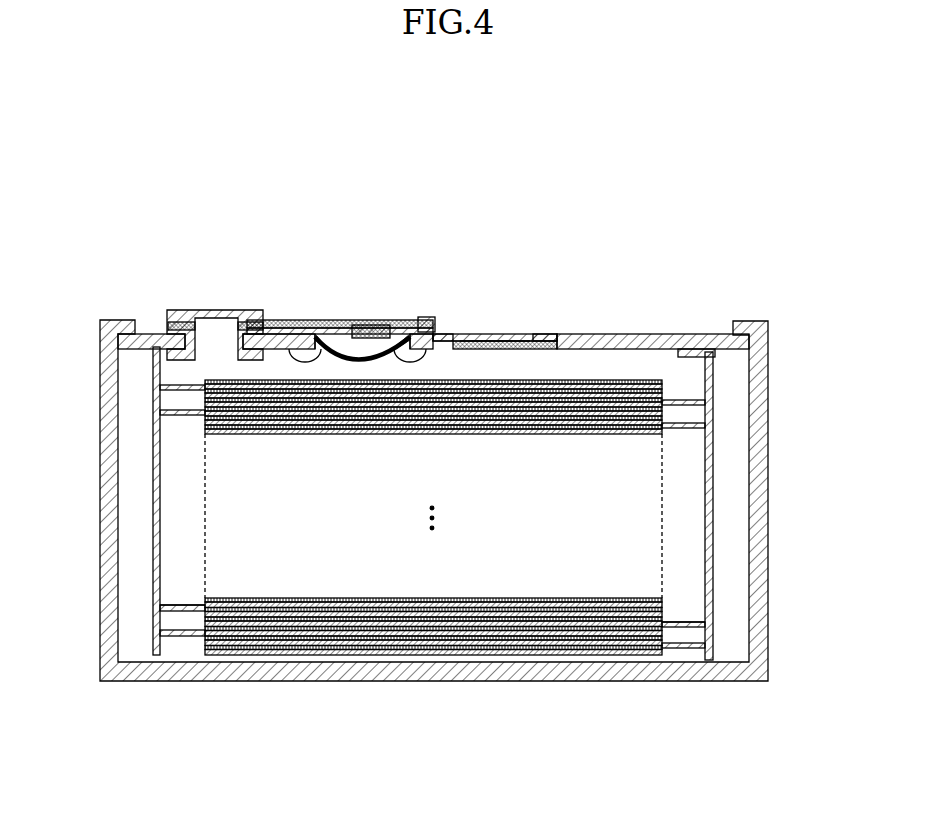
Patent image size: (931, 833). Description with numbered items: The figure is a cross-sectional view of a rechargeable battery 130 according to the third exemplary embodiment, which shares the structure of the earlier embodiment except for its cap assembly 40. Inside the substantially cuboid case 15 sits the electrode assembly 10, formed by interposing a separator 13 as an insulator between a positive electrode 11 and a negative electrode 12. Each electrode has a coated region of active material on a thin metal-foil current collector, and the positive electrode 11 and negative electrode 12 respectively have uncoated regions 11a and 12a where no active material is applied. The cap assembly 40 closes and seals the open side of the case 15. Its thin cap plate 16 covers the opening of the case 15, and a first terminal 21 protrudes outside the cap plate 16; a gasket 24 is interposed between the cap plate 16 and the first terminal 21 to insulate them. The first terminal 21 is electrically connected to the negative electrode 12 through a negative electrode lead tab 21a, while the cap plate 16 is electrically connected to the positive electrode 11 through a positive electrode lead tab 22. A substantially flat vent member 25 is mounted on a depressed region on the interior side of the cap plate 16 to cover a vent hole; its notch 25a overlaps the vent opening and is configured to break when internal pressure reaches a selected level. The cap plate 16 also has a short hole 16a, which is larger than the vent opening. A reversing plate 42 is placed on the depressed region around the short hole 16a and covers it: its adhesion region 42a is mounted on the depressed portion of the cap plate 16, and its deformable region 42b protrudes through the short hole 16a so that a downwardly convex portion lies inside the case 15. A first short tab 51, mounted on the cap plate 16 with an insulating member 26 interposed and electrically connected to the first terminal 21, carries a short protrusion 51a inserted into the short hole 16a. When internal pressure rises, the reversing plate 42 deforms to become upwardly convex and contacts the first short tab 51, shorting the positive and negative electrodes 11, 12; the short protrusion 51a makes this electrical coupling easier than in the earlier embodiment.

The rechargeable battery 130 is at (499, 140).
The electrode assembly 10 is at (437, 568).
The positive electrode 11 is at (425, 655).
The negative electrode 12 is at (300, 645).
The separator 13 is at (355, 645).
The uncoated region 11a is at (692, 648).
The uncoated region 12a is at (195, 640).
The case 15 is at (757, 430).
The cap plate 16 is at (648, 335).
The short hole 16a is at (372, 333).
The first terminal 21 is at (204, 315).
The negative electrode lead tab 21a is at (155, 510).
The positive electrode lead tab 22 is at (708, 522).
The gasket 24 is at (166, 330).
The vent member 25 is at (545, 340).
The notch 25a is at (503, 340).
The insulating member 26 is at (415, 325).
The cap assembly 40 is at (435, 287).
The reversing plate 42 is at (370, 287).
The adhesion region 42a is at (298, 322).
The deformable region 42b is at (432, 318).
The first short tab 51 is at (330, 322).
The short protrusion 51a is at (355, 356).